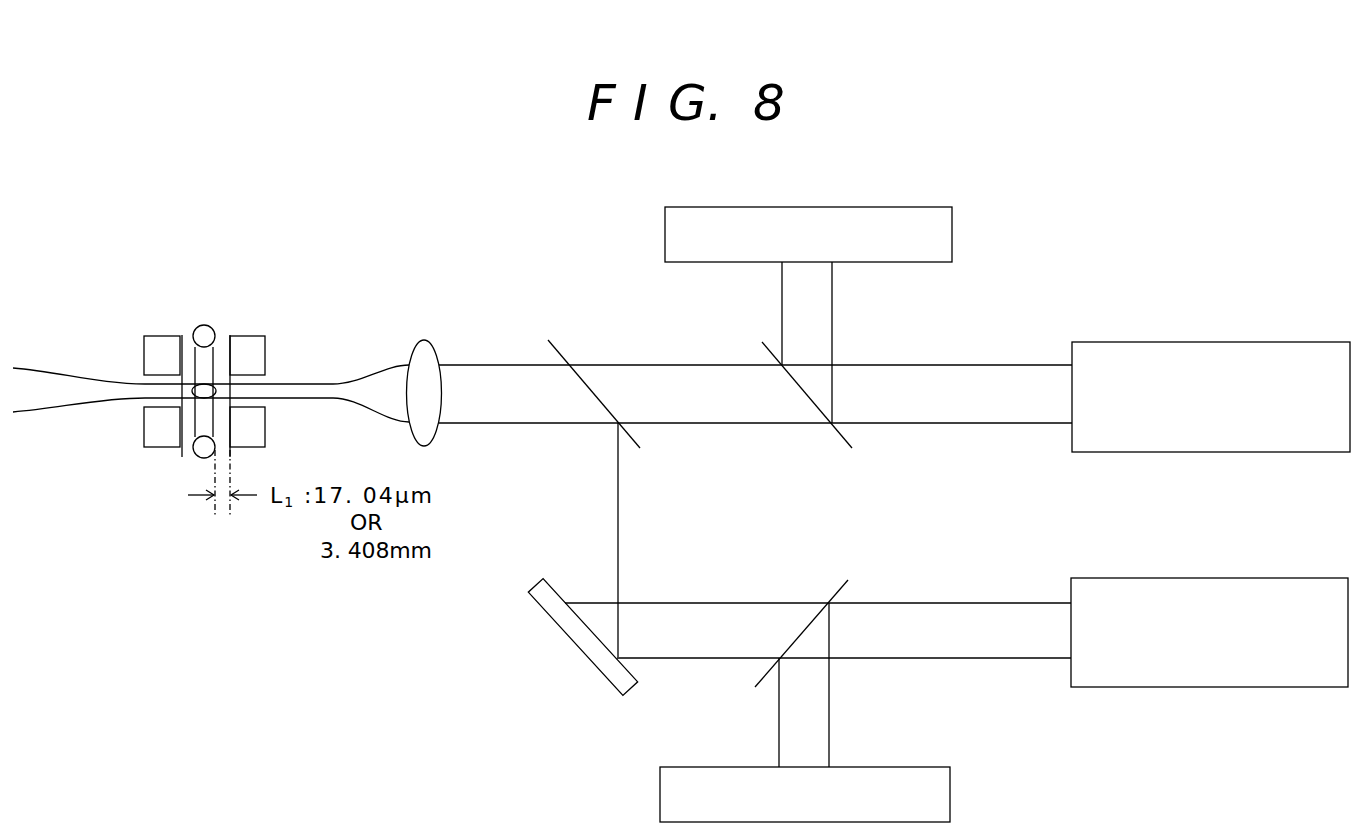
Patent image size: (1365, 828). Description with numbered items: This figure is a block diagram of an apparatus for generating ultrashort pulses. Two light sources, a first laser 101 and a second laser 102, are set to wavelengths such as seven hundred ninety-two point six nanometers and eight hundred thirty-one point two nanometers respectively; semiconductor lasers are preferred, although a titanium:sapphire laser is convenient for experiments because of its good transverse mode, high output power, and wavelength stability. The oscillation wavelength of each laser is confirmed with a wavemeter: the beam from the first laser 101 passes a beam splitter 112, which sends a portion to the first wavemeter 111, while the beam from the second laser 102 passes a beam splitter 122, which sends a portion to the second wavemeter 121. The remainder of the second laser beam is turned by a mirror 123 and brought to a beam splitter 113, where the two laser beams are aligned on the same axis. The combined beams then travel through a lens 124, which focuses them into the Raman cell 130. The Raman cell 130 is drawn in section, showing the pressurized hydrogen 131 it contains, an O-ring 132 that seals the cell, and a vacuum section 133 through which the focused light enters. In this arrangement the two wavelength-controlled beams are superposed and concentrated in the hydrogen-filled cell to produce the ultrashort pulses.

The first laser 101 is at (1210, 342).
The second laser 102 is at (1210, 578).
The first wavemeter 111 is at (845, 207).
The beam splitter 112 is at (770, 360).
The beam splitter 113 is at (573, 357).
The second wavemeter 121 is at (857, 767).
The beam splitter 122 is at (850, 580).
The mirror 123 is at (560, 635).
The lens 124 is at (426, 342).
The Raman cell 130 is at (268, 293).
The pressurized hydrogen 131 is at (200, 418).
The O-ring 132 is at (207, 332).
The vacuum section 133 is at (83, 368).